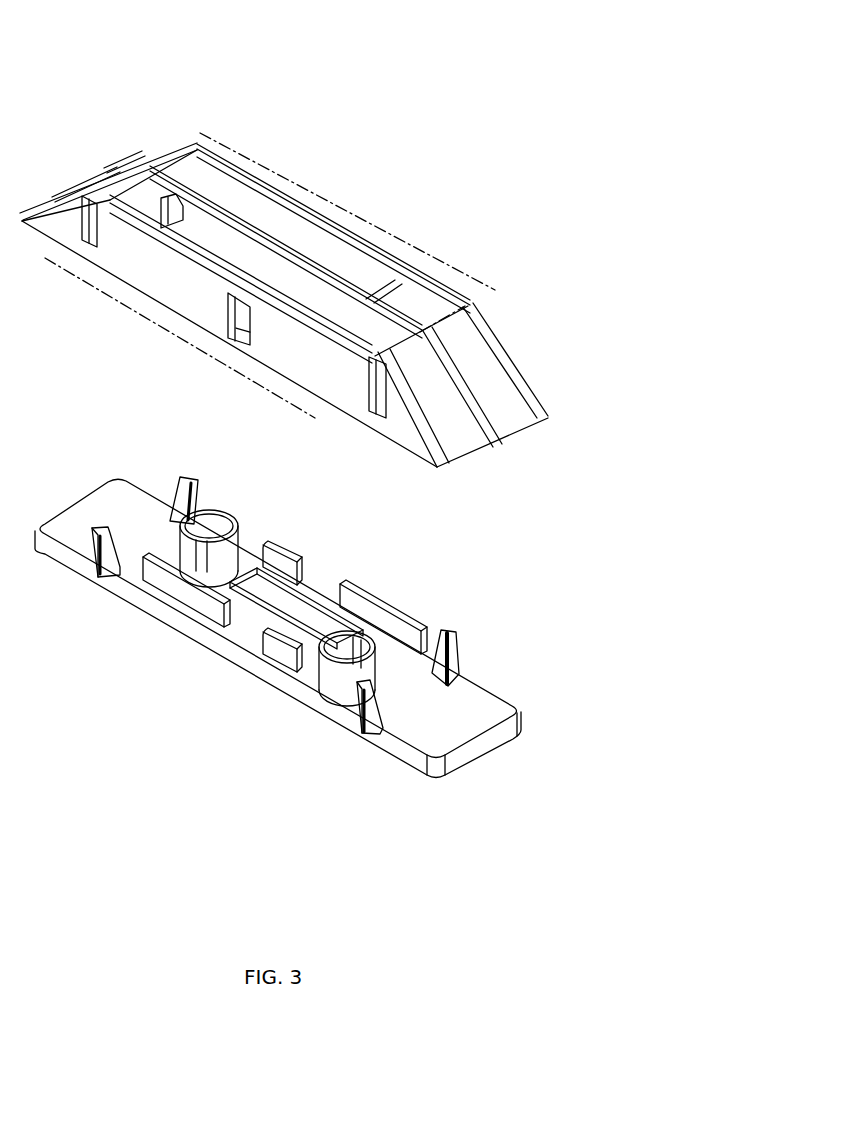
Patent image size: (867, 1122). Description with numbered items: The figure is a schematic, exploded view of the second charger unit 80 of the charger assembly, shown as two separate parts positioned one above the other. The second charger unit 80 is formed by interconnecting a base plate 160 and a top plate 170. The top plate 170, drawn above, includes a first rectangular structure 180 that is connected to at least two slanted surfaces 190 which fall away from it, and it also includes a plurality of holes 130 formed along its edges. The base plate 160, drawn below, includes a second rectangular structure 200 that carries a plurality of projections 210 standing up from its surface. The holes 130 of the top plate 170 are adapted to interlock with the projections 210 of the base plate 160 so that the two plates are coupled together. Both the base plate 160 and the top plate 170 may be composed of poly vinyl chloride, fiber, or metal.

The second charger unit 80 is at (396, 89).
The holes 130 is at (93, 245).
The base plate 160 is at (512, 651).
The top plate 170 is at (393, 181).
The first rectangular structure 180 is at (417, 245).
The slanted surfaces 190 is at (491, 384).
The second rectangular structure 200 is at (485, 723).
The projections 210 is at (193, 482).